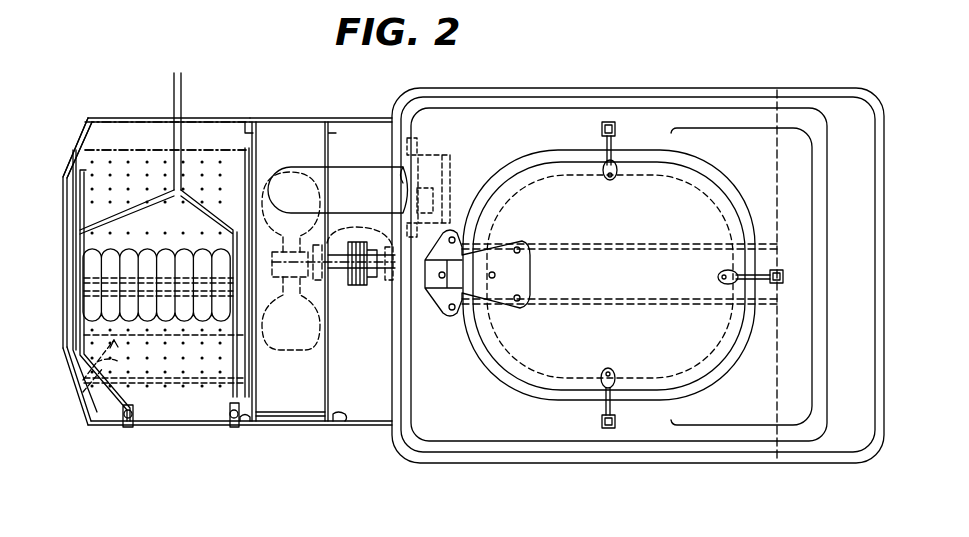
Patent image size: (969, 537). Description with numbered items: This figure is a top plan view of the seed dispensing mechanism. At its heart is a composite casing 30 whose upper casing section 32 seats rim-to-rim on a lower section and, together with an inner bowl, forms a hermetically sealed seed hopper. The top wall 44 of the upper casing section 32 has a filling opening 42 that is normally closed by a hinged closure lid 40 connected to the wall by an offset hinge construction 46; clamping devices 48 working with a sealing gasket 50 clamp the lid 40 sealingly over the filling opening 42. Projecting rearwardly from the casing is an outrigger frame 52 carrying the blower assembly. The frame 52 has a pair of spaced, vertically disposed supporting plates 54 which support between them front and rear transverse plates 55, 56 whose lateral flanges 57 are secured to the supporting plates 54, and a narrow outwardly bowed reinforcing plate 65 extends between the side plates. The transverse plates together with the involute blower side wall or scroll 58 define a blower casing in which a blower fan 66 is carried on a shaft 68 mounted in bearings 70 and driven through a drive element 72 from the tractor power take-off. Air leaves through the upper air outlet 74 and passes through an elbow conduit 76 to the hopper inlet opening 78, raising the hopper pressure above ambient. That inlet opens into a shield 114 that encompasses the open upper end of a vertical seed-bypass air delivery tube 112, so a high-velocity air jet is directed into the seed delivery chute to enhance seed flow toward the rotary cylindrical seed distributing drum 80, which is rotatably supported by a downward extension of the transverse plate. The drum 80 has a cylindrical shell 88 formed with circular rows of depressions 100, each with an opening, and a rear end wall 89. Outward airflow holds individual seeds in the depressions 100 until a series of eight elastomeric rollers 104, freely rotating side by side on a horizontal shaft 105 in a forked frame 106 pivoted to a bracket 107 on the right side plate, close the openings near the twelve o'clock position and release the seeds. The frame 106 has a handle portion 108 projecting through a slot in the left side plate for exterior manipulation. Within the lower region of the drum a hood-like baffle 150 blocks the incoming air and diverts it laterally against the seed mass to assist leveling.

The composite casing 30 is at (638, 312).
The upper casing section 32 is at (614, 473).
The hinged closure lid 40 is at (631, 337).
The filling opening 42 is at (520, 352).
The top wall 44 is at (470, 432).
The offset hinge construction 46 is at (458, 300).
The clamping devices 48 is at (763, 275).
The sealing gasket 50 is at (687, 384).
The outrigger frame 52 is at (110, 440).
The supporting plates 54 is at (267, 118).
The front transverse plate 55 is at (250, 133).
The rear transverse plate 56 is at (330, 133).
The lateral flanges 57 is at (245, 428).
The involute blower side wall or scroll 58 is at (300, 400).
The reinforcing plate 65 is at (80, 407).
The blower fan 66 is at (291, 324).
The shaft 68 is at (338, 265).
The bearings 70 is at (359, 228).
The coupling 72 is at (362, 285).
The upper air outlet 74 is at (292, 178).
The elbow conduit 76 is at (358, 180).
The hopper inlet opening 78 is at (411, 180).
The rotary cylindrical seed distributing drum 80 is at (131, 141).
The cylindrical shell 88 is at (99, 148).
The rear end wall 89 is at (75, 180).
The depressions 100 is at (110, 172).
The elastomeric rollers 104 is at (95, 270).
The horizontal shaft 105 is at (83, 300).
The forked frame 106 is at (99, 212).
The bracket 107 is at (173, 427).
The handle portion 108 is at (184, 92).
The seed-bypass air delivery tube 112 is at (442, 190).
The shield 114 is at (450, 160).
The hood-like baffle 150 is at (82, 380).